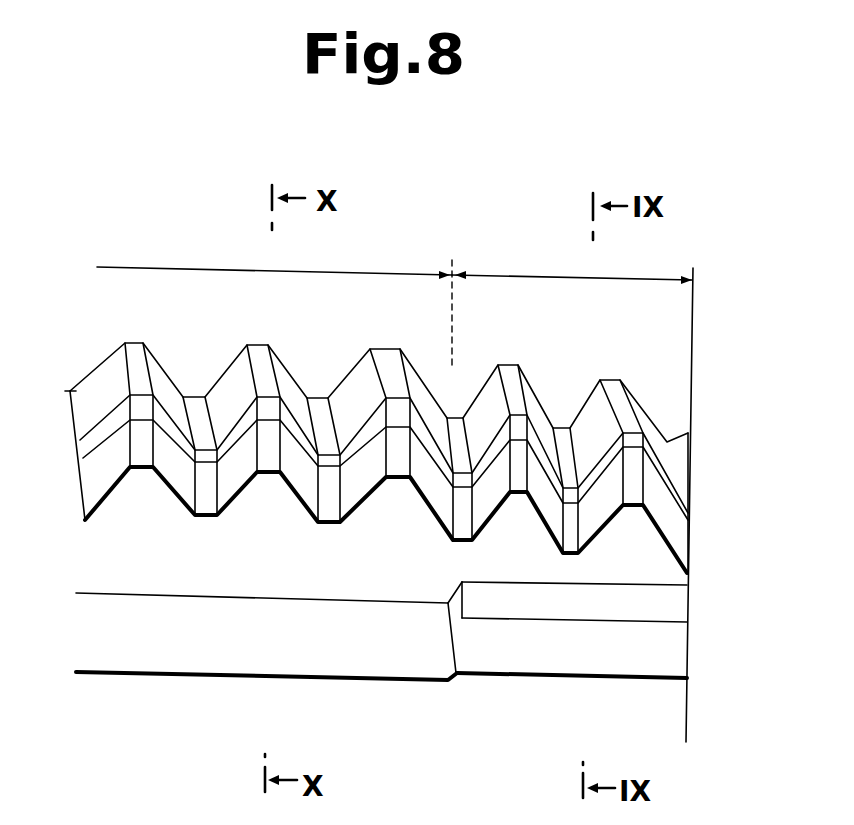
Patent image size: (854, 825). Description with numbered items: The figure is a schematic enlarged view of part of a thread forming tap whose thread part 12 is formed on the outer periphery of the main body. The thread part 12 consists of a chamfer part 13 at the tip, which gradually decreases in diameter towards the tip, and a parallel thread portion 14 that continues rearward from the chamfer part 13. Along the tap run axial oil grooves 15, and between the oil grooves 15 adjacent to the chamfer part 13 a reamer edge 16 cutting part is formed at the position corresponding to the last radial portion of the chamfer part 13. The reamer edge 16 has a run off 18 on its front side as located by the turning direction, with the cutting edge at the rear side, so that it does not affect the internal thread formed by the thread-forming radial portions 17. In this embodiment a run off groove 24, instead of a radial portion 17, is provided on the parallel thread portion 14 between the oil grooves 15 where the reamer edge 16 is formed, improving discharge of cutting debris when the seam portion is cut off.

The thread part 12 is at (183, 330).
The chamfer part 13 is at (572, 265).
The parallel thread portion 14 is at (274, 304).
The oil groove 15 is at (623, 567).
The reamer edge 16 is at (640, 616).
The thread-forming radial portion 17 is at (123, 413).
The run off 18 is at (652, 652).
The run off groove 24 is at (138, 615).